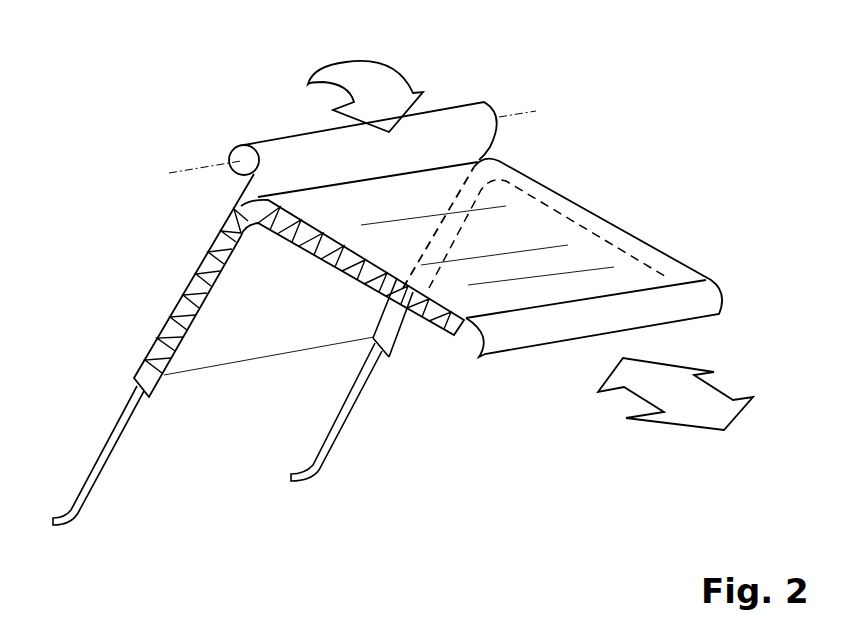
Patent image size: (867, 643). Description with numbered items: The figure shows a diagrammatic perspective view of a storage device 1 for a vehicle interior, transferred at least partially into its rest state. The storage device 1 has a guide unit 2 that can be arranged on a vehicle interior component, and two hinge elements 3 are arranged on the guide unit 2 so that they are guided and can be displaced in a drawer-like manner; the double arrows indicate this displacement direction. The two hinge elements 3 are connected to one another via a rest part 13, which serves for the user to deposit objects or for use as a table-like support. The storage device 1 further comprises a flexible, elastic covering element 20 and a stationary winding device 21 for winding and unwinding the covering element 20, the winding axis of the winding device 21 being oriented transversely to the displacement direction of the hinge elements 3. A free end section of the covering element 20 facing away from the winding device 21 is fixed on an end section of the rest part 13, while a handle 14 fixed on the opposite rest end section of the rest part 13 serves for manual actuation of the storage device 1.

The storage device 1 is at (168, 110).
The guide unit 2 is at (110, 453).
The hinge elements 3 is at (128, 388).
The rest part 13 is at (537, 230).
The handle 14 is at (708, 289).
The covering element 20 is at (490, 148).
The winding device 21 is at (243, 158).